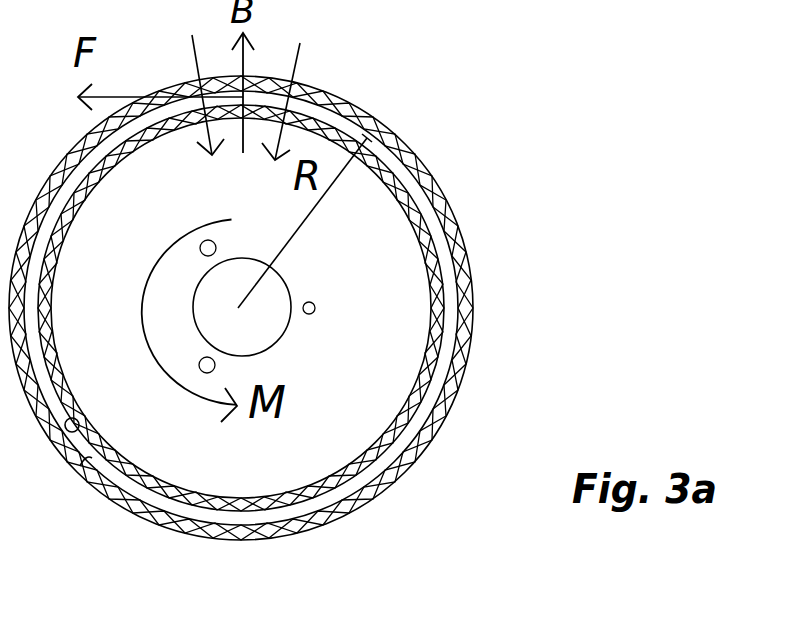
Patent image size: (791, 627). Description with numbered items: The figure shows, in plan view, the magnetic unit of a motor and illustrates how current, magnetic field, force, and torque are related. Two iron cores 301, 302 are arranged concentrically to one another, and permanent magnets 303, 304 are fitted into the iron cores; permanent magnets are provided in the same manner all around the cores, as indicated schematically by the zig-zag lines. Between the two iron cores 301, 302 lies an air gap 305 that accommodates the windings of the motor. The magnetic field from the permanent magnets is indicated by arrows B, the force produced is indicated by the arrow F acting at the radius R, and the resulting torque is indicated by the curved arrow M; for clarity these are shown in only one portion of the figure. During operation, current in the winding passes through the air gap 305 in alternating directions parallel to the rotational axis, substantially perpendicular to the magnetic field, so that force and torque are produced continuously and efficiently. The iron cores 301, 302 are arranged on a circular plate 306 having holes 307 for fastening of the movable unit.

The iron core 301 is at (465, 262).
The iron core 302 is at (417, 230).
The permanent magnet 303 is at (80, 458).
The permanent magnet 304 is at (78, 419).
The air gap 305 is at (397, 160).
The circular plate 306 is at (133, 276).
The holes 307 is at (315, 308).